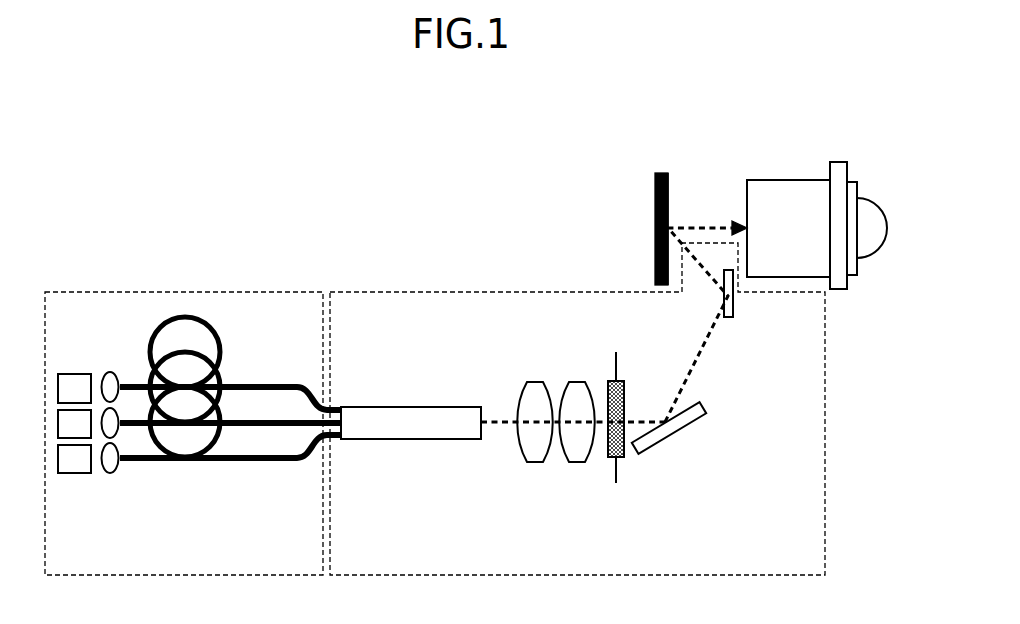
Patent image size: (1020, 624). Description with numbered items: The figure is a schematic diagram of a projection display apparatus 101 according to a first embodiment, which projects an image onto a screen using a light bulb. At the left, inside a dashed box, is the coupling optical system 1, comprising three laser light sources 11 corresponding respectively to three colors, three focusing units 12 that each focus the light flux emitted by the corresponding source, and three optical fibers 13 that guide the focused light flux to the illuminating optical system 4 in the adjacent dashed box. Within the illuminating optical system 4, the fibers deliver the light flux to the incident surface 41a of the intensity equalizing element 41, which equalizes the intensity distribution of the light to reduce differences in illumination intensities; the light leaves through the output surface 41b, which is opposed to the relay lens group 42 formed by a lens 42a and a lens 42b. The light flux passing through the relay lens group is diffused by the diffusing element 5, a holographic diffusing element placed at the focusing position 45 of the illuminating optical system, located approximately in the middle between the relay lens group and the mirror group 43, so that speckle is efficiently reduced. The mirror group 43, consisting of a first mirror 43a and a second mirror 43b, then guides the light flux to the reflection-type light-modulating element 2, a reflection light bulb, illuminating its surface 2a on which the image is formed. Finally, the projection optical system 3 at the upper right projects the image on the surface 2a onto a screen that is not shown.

The projection display apparatus 101 is at (522, 185).
The coupling optical system 1 is at (282, 291).
The laser light sources 11 is at (72, 475).
The focusing units 12 is at (110, 474).
The optical fibers 13 is at (184, 460).
The illuminating optical system 4 is at (606, 291).
The intensity equalizing element 41 is at (424, 407).
The incident surface 41a is at (338, 404).
The output surface 41b is at (484, 408).
The relay lens group 42 is at (508, 518).
The lens 42a is at (535, 462).
The lens 42b is at (577, 462).
The diffusing element 5 is at (607, 381).
The focusing position 45 is at (617, 360).
The mirror group 43 is at (721, 385).
The first mirror 43a is at (680, 434).
The second mirror 43b is at (733, 297).
The reflection-type light-modulating element 2 is at (655, 192).
The surface 2a is at (668, 190).
The projection optical system 3 is at (745, 148).